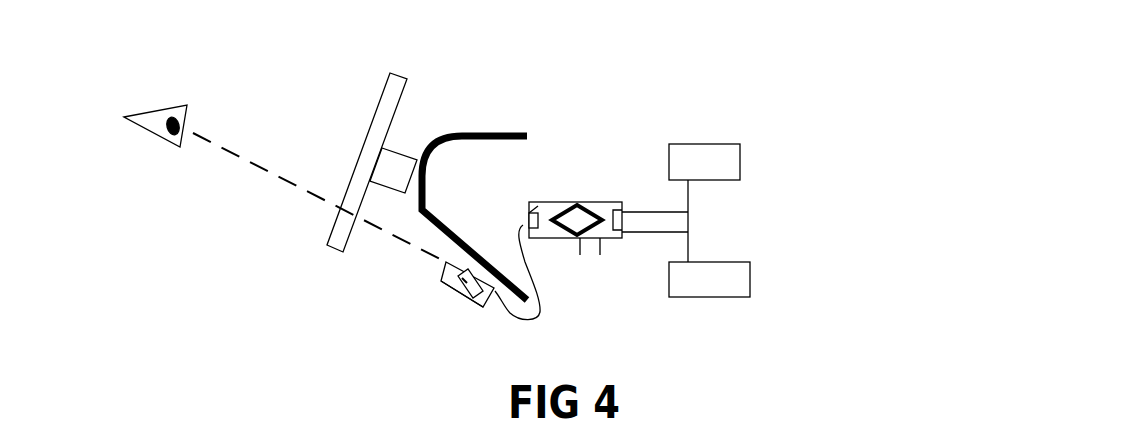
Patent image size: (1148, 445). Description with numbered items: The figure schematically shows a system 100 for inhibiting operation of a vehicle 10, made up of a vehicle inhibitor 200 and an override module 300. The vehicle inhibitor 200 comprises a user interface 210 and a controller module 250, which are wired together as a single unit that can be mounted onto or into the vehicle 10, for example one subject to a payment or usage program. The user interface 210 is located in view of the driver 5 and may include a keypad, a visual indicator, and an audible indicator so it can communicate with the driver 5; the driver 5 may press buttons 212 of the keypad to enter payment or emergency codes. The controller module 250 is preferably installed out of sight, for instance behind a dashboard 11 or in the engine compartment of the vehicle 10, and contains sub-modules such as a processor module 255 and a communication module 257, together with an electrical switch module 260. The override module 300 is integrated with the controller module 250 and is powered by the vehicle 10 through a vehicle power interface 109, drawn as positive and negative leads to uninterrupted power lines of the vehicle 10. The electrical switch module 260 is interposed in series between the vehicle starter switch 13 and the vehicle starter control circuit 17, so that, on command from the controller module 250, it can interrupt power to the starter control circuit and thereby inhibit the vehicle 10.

The system 100 is at (774, 90).
The driver 5 is at (153, 112).
The vehicle 10 is at (373, 118).
The dashboard 11 is at (470, 132).
The buttons 212 is at (447, 266).
The processor module 255 is at (457, 279).
The user interface 210 is at (482, 307).
The vehicle inhibitor 200 is at (541, 323).
The controller module 250 is at (617, 202).
The communication module 257 is at (529, 221).
The override module 300 is at (528, 205).
The electrical switch module 260 is at (660, 223).
The vehicle starter switch 13 is at (740, 156).
The vehicle starter control circuit 17 is at (750, 275).
The vehicle power interface 109 is at (590, 255).